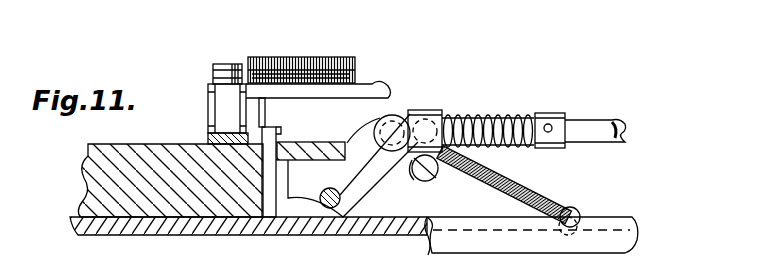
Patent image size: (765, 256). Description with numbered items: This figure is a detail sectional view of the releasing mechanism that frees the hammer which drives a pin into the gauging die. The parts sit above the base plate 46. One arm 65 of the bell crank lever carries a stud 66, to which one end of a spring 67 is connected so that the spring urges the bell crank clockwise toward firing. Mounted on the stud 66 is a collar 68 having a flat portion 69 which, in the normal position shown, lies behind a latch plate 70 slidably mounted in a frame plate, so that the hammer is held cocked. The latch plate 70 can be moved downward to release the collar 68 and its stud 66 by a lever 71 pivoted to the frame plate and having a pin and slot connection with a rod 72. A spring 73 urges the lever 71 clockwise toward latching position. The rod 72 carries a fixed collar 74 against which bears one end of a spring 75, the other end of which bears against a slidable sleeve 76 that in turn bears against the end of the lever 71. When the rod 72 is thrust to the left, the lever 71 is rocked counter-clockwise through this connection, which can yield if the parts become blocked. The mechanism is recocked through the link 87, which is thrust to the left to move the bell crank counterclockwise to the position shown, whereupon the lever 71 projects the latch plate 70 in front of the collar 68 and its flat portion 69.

The base plate 46 is at (98, 191).
The arm of bell crank lever 65 is at (208, 141).
The stud 66 is at (227, 64).
The spring 67 is at (308, 57).
The collar 68 is at (233, 110).
The flat portion 69 is at (262, 108).
The latch plate 70 is at (277, 131).
The lever 71 is at (360, 191).
The rod 72 is at (617, 124).
The spring 73 is at (525, 193).
The collar 74 is at (546, 112).
The spring 75 is at (487, 112).
The slidable sleeve 76 is at (422, 110).
The link 87 is at (372, 93).